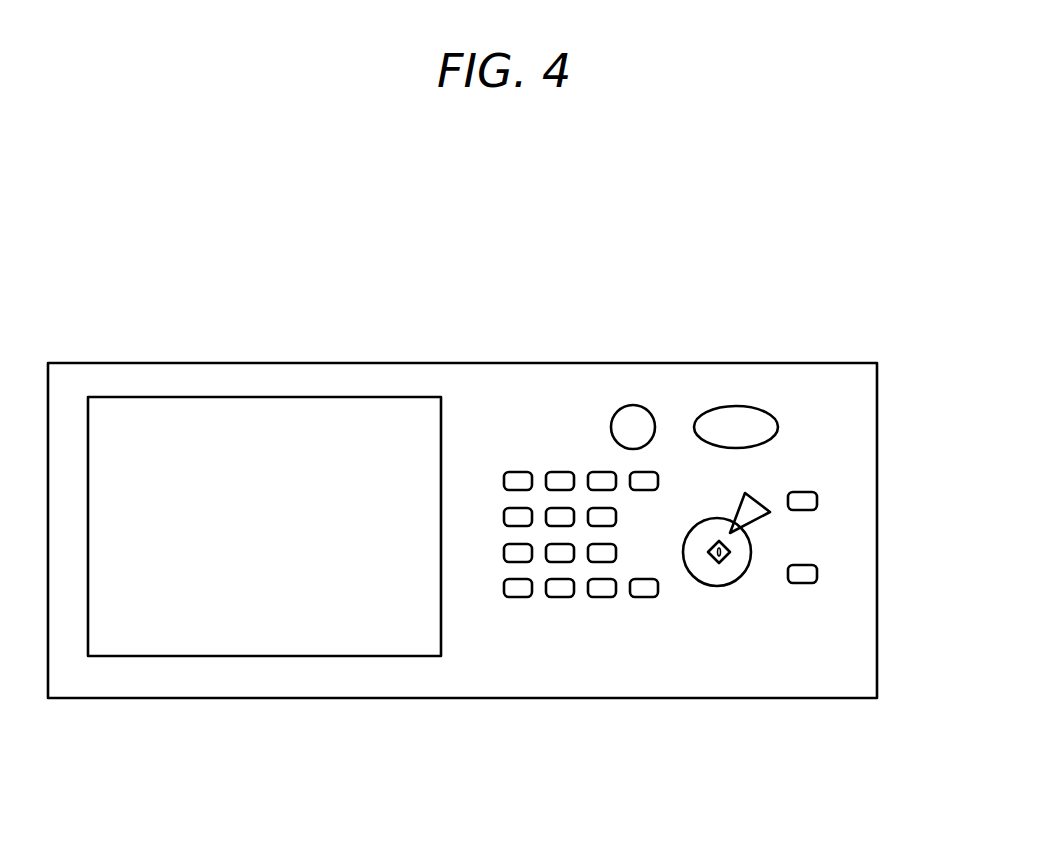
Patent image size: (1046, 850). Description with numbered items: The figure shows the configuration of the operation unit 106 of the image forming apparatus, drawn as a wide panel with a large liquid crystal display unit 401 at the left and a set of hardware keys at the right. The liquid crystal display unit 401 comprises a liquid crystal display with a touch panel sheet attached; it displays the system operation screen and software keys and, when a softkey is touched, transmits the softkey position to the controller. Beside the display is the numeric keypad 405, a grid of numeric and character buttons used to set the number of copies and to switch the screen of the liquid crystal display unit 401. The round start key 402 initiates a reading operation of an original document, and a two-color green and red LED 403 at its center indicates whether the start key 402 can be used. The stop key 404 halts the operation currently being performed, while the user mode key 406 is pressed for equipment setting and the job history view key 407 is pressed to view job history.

The operation unit 106 is at (462, 588).
The liquid crystal display unit 401 is at (264, 457).
The start key 402 is at (820, 593).
The two-color LED 403 is at (800, 435).
The stop key 404 is at (835, 462).
The numeric keypad 405 is at (626, 440).
The user mode key 406 is at (860, 478).
The job history view key 407 is at (872, 537).